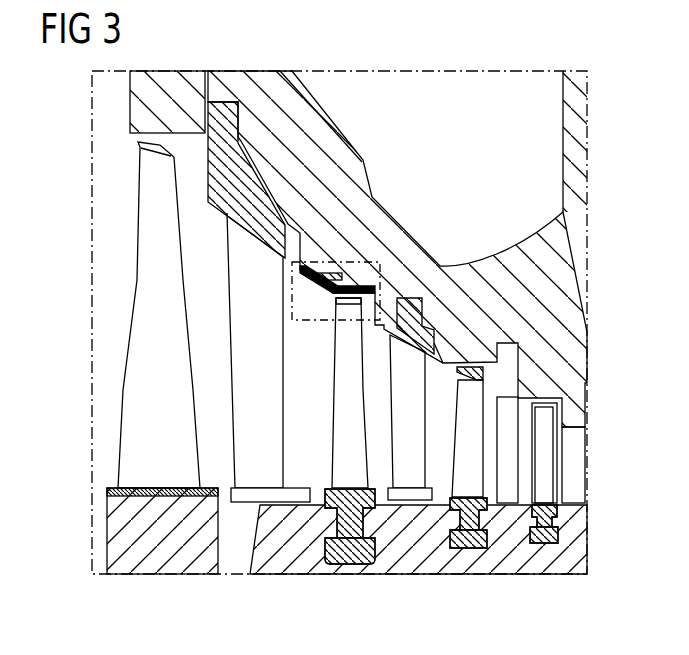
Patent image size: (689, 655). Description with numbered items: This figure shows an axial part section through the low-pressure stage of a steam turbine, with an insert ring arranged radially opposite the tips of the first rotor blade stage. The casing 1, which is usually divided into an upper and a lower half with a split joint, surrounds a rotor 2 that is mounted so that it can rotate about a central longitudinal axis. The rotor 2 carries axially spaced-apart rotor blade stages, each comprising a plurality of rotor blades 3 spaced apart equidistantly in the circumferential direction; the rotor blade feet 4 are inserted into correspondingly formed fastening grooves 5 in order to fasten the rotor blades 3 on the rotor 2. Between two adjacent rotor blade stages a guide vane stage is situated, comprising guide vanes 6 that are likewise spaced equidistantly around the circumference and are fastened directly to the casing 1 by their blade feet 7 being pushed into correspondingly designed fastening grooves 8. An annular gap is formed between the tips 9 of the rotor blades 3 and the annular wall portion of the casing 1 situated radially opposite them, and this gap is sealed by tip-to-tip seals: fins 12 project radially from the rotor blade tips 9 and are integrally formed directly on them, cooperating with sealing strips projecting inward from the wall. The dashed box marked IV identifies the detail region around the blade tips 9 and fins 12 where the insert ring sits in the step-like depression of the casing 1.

The casing 1 is at (262, 72).
The rotor 2 is at (533, 574).
The rotor blade 3 is at (473, 463).
The rotor blade foot 4 is at (339, 556).
The fastening groove 5 is at (380, 558).
The guide vane 6 is at (243, 358).
The blade foot 7 is at (402, 297).
The fastening groove 8 is at (433, 302).
The rotor blade tip 9 is at (340, 301).
The fin 12 is at (355, 269).
The detail IV is at (293, 283).